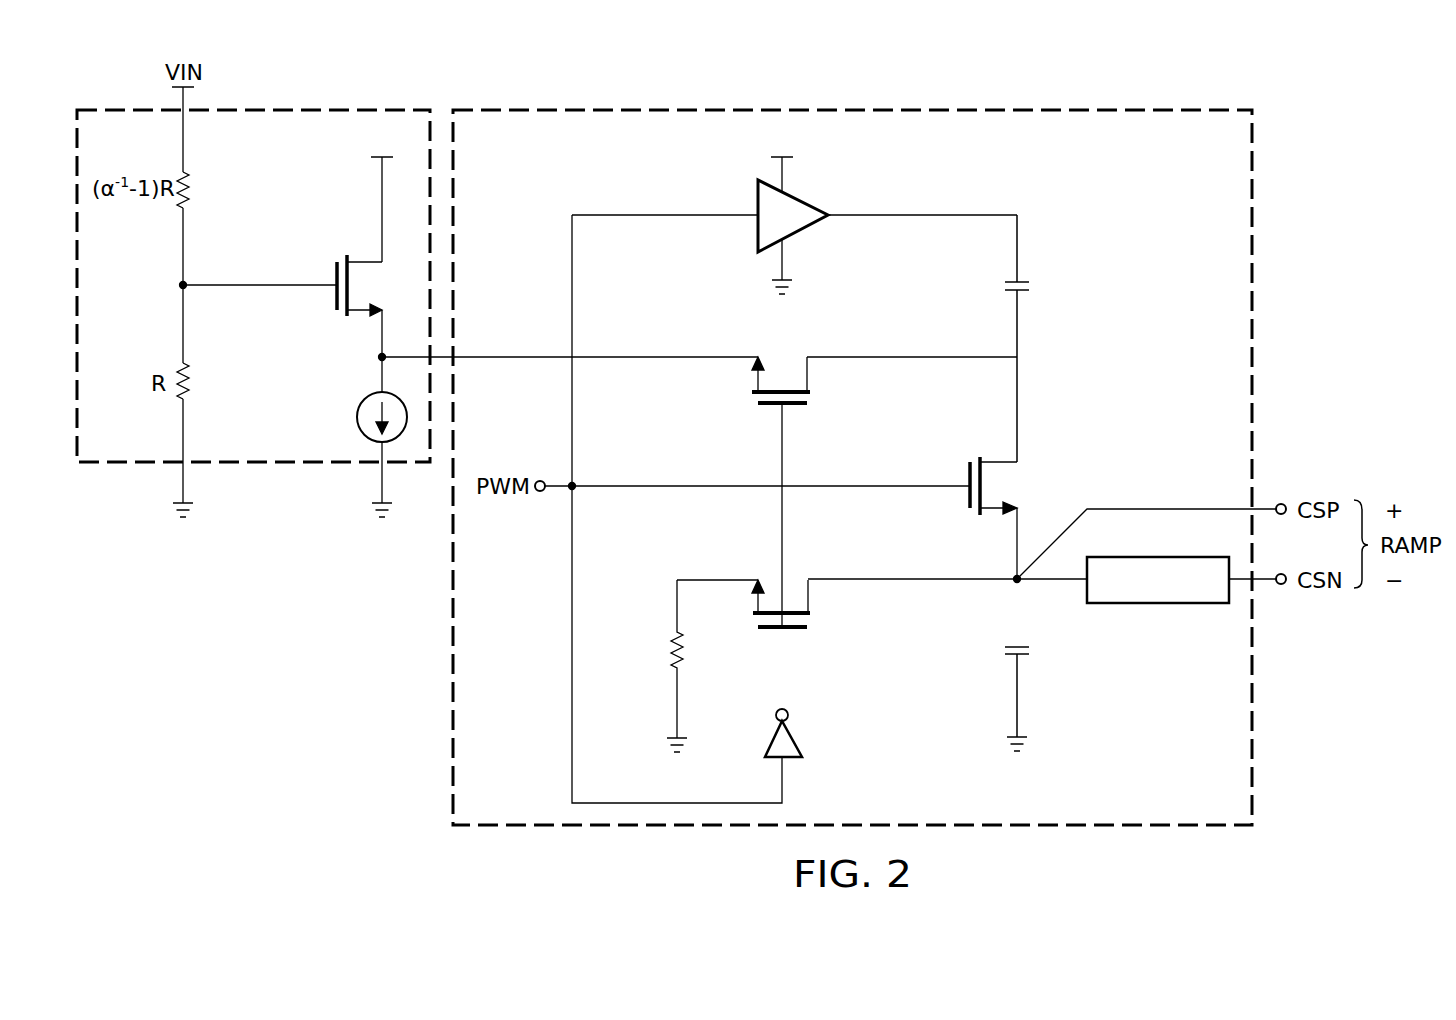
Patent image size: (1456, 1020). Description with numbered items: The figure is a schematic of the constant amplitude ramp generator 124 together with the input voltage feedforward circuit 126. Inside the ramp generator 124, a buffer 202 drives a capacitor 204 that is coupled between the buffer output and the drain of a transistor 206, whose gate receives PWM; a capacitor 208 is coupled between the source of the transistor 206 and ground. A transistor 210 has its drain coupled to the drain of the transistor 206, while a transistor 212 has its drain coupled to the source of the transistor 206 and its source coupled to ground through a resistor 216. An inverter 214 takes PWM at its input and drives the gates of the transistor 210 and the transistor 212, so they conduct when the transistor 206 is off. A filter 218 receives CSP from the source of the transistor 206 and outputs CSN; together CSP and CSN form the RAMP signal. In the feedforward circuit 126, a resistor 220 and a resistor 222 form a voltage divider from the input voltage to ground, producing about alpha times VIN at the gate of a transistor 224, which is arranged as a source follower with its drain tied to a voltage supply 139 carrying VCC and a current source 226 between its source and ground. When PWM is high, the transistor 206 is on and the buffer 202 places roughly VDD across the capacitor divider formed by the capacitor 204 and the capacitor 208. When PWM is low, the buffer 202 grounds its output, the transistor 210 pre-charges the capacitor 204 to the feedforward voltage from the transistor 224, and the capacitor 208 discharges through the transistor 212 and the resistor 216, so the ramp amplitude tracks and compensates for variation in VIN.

The input voltage feedforward circuit 126 is at (110, 106).
The constant amplitude ramp generator 124 is at (1024, 104).
The voltage supply 139 is at (365, 165).
The resistor 220 is at (191, 190).
The resistor 222 is at (191, 378).
The transistor 224 is at (335, 270).
The current source 226 is at (358, 416).
The buffer 202 is at (805, 200).
The capacitor 204 is at (1032, 286).
The transistor 206 is at (968, 500).
The capacitor 208 is at (1032, 648).
The transistor 210 is at (770, 406).
The transistor 212 is at (770, 632).
The inverter 214 is at (797, 735).
The resistor 216 is at (672, 648).
The filter 218 is at (1158, 604).